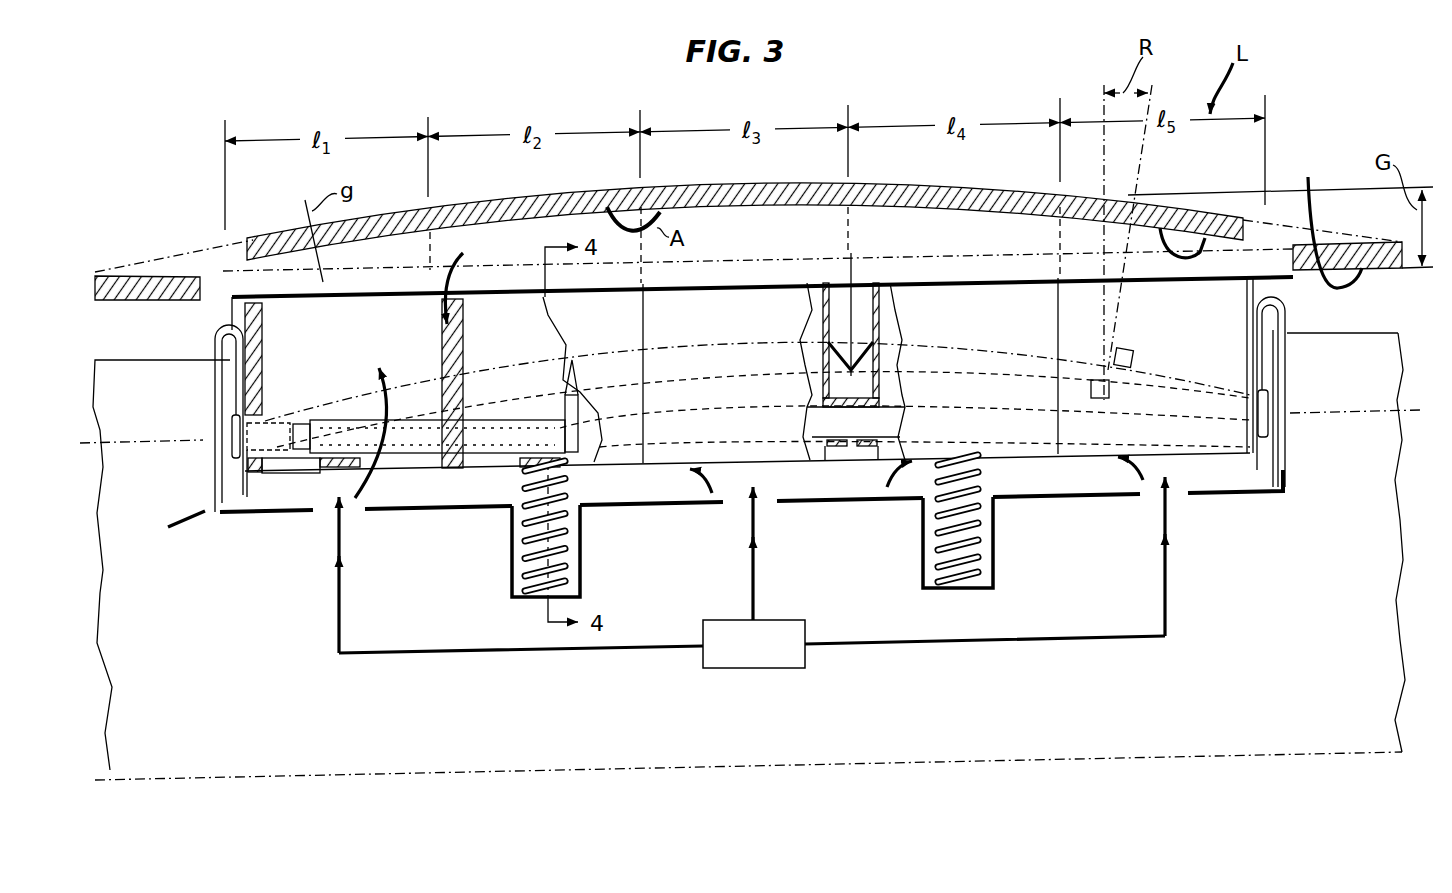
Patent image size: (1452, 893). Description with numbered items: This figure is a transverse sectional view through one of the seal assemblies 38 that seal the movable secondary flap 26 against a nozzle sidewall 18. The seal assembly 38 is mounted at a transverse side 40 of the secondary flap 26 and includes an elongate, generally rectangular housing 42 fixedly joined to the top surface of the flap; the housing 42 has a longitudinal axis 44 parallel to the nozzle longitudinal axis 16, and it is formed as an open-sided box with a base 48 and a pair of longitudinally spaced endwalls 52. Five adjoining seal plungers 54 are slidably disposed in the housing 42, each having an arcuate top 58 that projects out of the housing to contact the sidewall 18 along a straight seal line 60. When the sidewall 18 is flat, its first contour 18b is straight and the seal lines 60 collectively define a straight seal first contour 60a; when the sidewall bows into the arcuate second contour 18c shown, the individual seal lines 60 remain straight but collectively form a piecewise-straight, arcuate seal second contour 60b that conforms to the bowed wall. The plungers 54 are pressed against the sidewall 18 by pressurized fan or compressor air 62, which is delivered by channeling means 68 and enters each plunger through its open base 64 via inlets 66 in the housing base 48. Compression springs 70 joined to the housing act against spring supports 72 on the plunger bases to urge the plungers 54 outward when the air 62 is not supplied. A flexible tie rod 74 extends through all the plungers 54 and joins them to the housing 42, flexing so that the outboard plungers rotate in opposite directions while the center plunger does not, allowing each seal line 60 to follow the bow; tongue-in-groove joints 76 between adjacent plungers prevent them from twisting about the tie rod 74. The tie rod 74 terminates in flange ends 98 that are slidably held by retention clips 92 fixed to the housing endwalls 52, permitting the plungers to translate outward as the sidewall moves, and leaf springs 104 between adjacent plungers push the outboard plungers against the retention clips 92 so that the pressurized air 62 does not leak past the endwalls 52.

The nozzle longitudinal axis 16 is at (940, 765).
The nozzle sidewall 18 is at (1205, 240).
The sidewall first contour 18b is at (920, 297).
The sidewall second contour 18c is at (758, 207).
The secondary flap 26 is at (1398, 477).
The seal assembly 38 is at (171, 529).
The transverse side 40 is at (1370, 333).
The housing 42 is at (1264, 500).
The housing longitudinal axis 44 is at (158, 441).
The housing base 48 is at (1213, 494).
The housing endwall 52 is at (223, 490).
The seal plunger 54 is at (632, 287).
The plunger top 58 is at (762, 300).
The seal line 60 is at (1143, 280).
The seal first contour 60a is at (948, 282).
The seal second contour 60b is at (916, 204).
The pressurized air 62 is at (336, 520).
The plunger open base 64 is at (272, 473).
The inlet 66 is at (363, 513).
The channeling means 68 is at (785, 620).
The compression spring 70 is at (580, 548).
The spring support 72 is at (520, 463).
The tie rod 74 is at (425, 415).
The tongue-in-groove joint 76 is at (465, 351).
The retention clip 92 is at (214, 336).
The flange end 98 is at (232, 437).
The leaf spring 104 is at (822, 363).